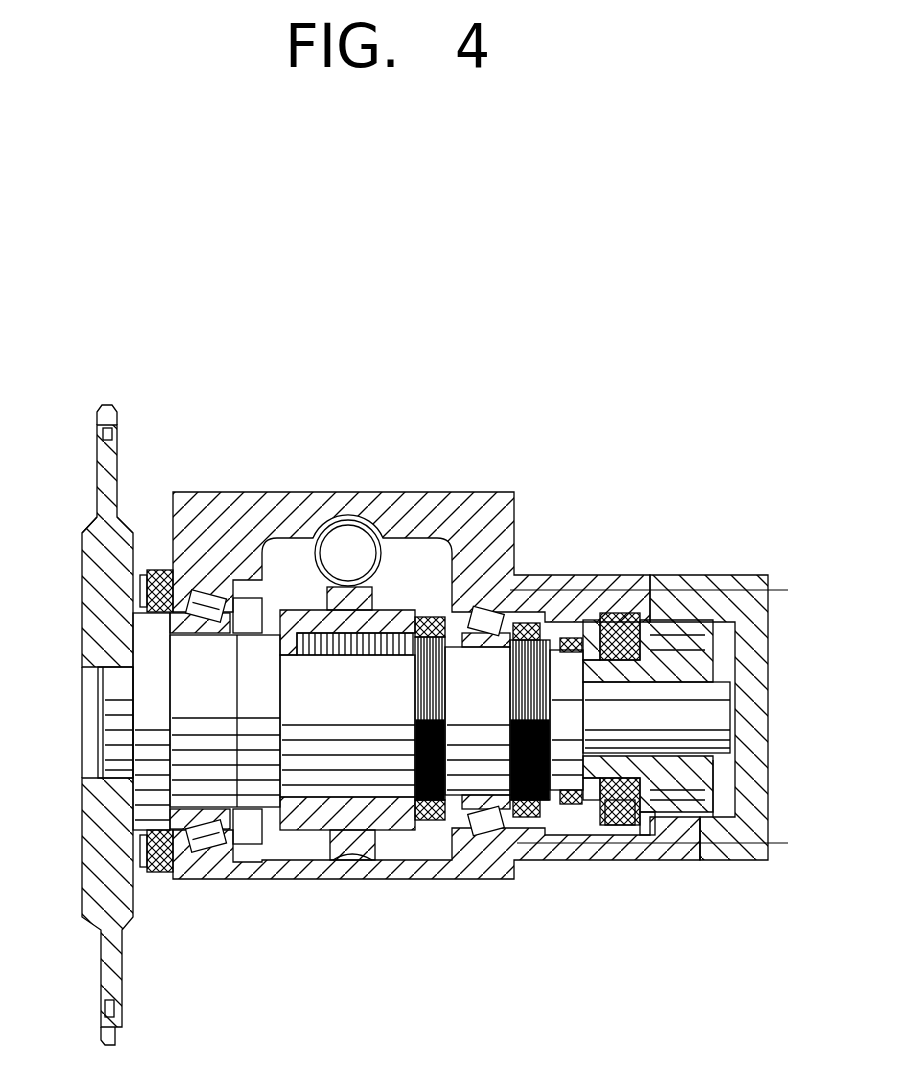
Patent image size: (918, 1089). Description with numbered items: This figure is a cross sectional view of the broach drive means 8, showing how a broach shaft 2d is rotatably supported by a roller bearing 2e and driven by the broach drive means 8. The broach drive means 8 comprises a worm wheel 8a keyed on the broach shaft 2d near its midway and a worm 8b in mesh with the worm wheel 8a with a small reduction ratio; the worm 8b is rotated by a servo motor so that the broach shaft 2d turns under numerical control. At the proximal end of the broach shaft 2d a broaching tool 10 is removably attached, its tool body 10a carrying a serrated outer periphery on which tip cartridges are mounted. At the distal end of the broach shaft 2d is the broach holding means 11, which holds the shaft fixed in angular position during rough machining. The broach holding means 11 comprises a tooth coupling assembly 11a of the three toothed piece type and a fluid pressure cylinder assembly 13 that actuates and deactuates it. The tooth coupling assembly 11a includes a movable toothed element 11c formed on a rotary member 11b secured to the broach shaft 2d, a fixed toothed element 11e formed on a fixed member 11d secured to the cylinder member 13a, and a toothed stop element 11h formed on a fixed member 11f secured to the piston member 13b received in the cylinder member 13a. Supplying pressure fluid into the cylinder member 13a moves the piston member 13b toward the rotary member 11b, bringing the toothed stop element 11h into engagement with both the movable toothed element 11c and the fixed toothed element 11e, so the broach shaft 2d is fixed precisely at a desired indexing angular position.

The broach shaft 2d is at (325, 777).
The roller bearing 2e is at (212, 838).
The broach drive means 8 is at (472, 488).
The worm wheel 8a is at (360, 838).
The worm 8b is at (352, 540).
The broaching tool 10 is at (81, 576).
The tool body 10a is at (104, 553).
The broach holding means 11 is at (616, 602).
The tooth coupling assembly 11a is at (623, 625).
The rotary member 11b is at (597, 800).
The movable toothed element 11c is at (618, 812).
The fixed member 11d is at (612, 830).
The fixed toothed element 11e is at (632, 833).
The fixed member 11f is at (652, 800).
The toothed stop element 11h is at (643, 640).
The fluid pressure cylinder assembly 13 is at (653, 759).
The cylinder member 13a is at (697, 835).
The piston member 13b is at (733, 805).